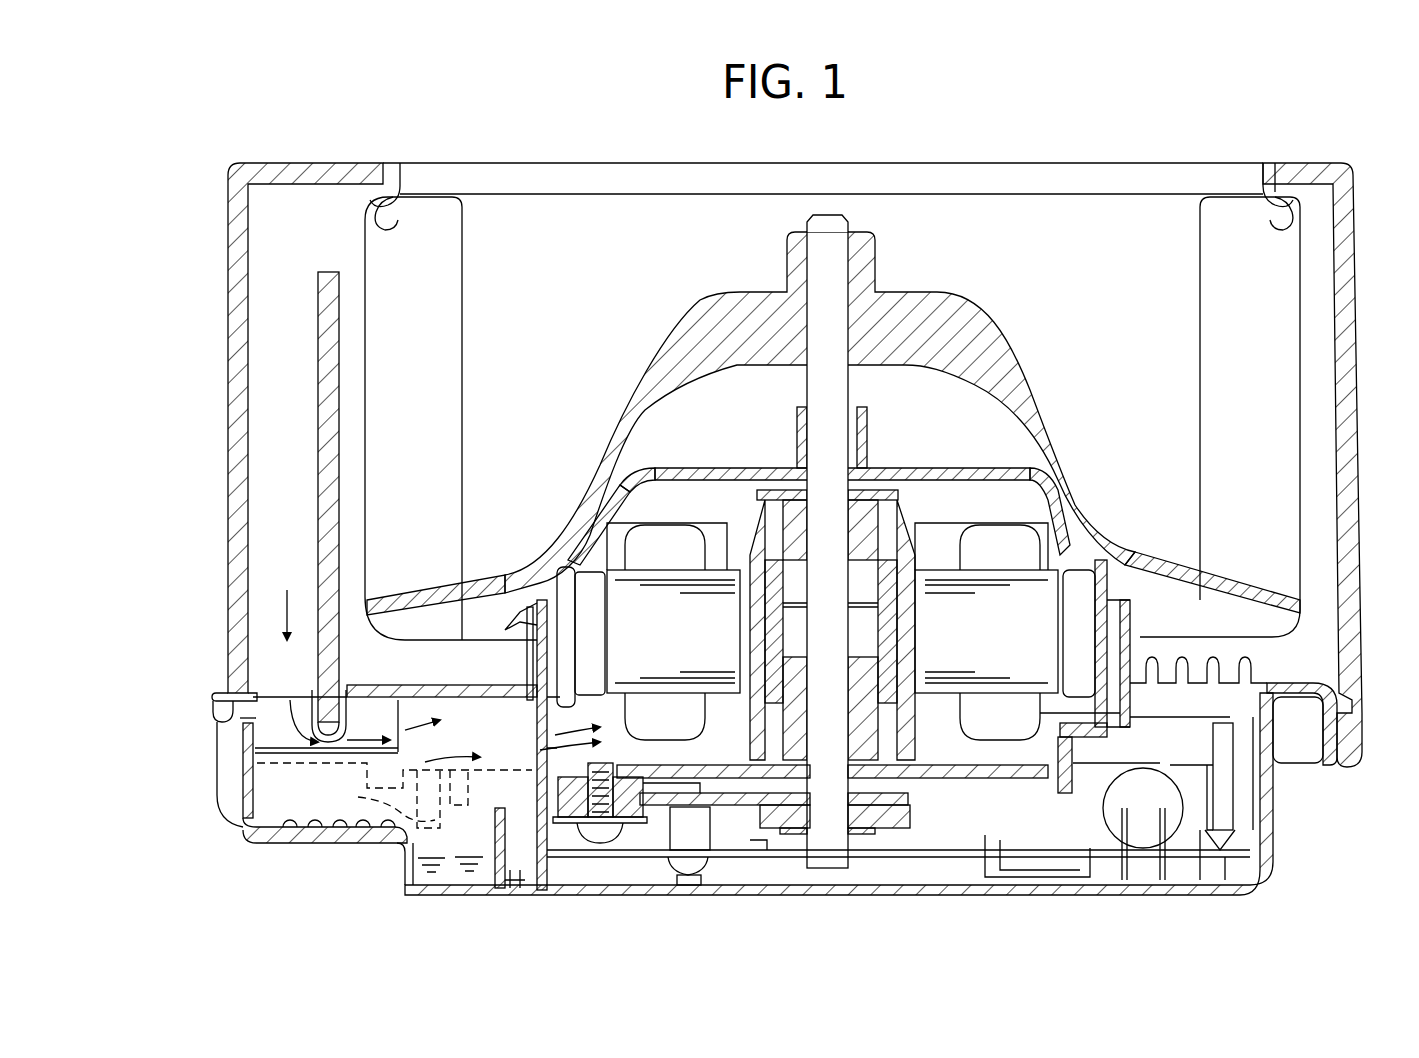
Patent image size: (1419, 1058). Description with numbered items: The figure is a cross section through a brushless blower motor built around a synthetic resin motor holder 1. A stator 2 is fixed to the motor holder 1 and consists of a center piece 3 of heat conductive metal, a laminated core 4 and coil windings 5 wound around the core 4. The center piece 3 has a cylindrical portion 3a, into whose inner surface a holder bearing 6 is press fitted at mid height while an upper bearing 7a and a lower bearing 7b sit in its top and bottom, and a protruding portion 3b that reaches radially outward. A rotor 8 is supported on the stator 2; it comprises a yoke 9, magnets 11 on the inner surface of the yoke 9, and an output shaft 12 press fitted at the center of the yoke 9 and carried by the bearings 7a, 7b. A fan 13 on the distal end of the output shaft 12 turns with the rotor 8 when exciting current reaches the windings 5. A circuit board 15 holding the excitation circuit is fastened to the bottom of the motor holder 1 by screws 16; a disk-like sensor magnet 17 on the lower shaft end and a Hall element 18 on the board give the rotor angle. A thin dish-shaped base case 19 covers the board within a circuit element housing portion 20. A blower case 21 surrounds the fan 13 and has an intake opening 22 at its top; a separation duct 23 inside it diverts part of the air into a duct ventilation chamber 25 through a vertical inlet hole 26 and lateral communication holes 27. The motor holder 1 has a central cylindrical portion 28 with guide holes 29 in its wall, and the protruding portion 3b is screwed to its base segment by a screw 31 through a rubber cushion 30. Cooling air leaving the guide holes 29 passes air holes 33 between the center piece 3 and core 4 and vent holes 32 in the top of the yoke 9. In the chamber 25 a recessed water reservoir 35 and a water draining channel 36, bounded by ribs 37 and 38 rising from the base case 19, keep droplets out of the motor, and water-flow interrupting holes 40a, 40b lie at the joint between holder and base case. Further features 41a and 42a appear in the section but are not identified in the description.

The motor holder 1 is at (480, 684).
The stator 2 is at (1045, 520).
The center piece 3 is at (900, 492).
The cylindrical portion 3a is at (920, 630).
The protruding portion 3b is at (665, 762).
The laminated core 4 is at (1058, 545).
The coil windings 5 is at (1000, 530).
The holder bearing 6 is at (765, 628).
The upper bearing 7a is at (795, 538).
The lower bearing 7b is at (862, 735).
The rotor 8 is at (618, 472).
The yoke 9 is at (738, 468).
The magnets 11 is at (572, 580).
The output shaft 12 is at (860, 388).
The fan 13 is at (1085, 172).
The circuit board 15 is at (665, 880).
The screws 16 is at (703, 878).
The sensor magnet 17 is at (885, 832).
The Hall element 18 is at (770, 840).
The base case 19 is at (940, 895).
The circuit element housing portion 20 is at (840, 875).
The blower case 21 is at (1352, 278).
The opening 22 is at (1275, 182).
The separation duct 23 is at (258, 325).
The duct ventilation chamber 25 is at (270, 835).
The inlet hole 26 is at (235, 698).
The communication holes 27 is at (336, 835).
The cylindrical portion 28 is at (535, 612).
The guide holes 29 is at (540, 762).
The rubber cushion 30 is at (640, 845).
The screw 31 is at (600, 825).
The vent holes 32 is at (668, 468).
The air holes 33 is at (750, 653).
The water reservoir 35 is at (405, 890).
The water draining channel 36 is at (500, 890).
The rib 37 is at (510, 890).
The rib 38 is at (545, 890).
The water-flow interrupting hole 40a is at (385, 808).
The water-flow interrupting hole 40b is at (452, 843).
The air channel 41a is at (478, 760).
The partition plate 42a is at (412, 705).